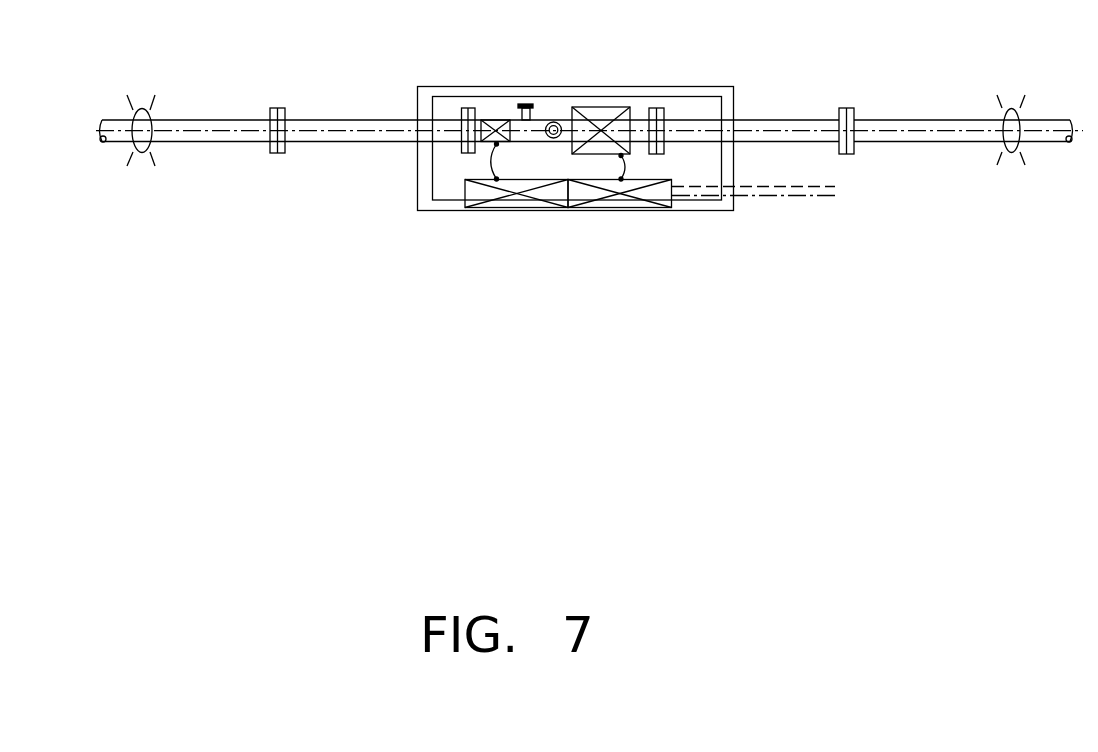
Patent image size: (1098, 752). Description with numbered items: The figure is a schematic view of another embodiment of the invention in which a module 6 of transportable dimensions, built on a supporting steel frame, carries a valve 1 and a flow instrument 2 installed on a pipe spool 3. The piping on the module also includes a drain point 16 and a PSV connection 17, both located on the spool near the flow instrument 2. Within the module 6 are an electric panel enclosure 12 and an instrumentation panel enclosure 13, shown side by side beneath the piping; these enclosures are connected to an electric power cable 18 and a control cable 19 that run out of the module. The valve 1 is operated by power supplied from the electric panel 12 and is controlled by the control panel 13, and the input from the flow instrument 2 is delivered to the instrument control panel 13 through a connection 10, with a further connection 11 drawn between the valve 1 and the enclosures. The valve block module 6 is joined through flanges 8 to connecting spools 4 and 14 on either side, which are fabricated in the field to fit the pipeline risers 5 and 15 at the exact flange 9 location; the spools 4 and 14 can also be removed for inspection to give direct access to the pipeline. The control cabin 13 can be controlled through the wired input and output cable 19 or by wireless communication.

The valve 1 is at (602, 107).
The flow instrument 2 is at (495, 120).
The pipe spool 3 is at (549, 121).
The connecting spool 4 is at (367, 118).
The pipeline riser 5 is at (258, 117).
The module 6 is at (679, 92).
The flange 8 is at (465, 152).
The flange 9 is at (283, 152).
The connection 10 is at (491, 161).
The connection line 11 is at (625, 165).
The electric panel enclosure 12 is at (623, 198).
The instrumentation panel enclosure 13 is at (516, 201).
The connecting spool 14 is at (778, 118).
The pipeline riser 15 is at (933, 118).
The drain point 16 is at (527, 104).
The PSV connection 17 is at (558, 122).
The electric power cable 18 is at (788, 186).
The control cable 19 is at (788, 196).